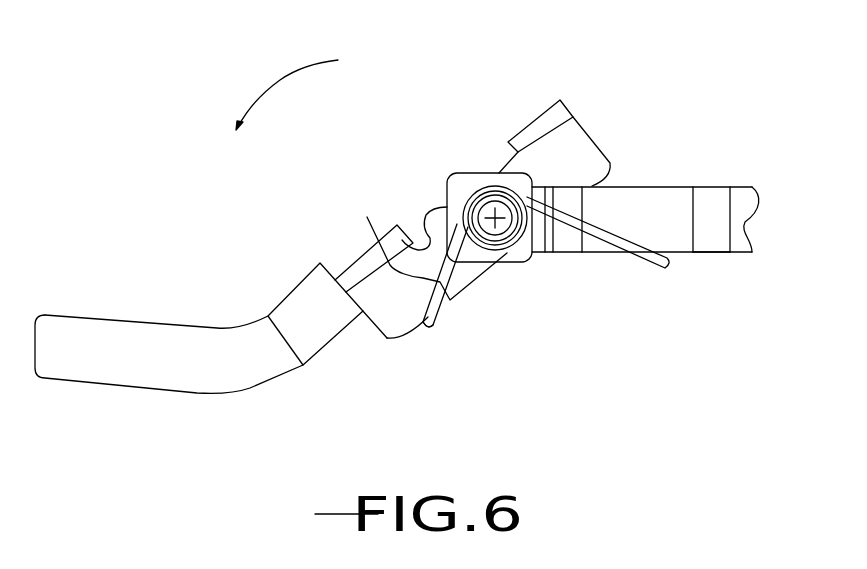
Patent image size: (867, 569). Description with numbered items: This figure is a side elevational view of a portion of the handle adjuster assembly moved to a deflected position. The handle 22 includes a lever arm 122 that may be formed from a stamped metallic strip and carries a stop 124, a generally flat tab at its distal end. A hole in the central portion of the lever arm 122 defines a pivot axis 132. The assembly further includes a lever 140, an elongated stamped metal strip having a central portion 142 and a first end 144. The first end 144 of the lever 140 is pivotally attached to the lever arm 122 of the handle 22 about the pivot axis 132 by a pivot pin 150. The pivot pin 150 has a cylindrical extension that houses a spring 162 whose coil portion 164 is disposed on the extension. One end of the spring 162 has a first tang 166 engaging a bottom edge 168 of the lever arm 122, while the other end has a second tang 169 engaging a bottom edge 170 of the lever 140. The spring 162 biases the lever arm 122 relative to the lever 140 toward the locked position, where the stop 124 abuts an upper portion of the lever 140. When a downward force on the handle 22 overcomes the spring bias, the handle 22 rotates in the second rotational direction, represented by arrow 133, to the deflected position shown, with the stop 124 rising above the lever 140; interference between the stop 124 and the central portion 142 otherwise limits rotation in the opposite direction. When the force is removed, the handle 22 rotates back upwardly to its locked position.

The handle 22 is at (78, 315).
The lever arm 122 is at (395, 325).
The stop 124 is at (540, 118).
The pivot axis 132 is at (490, 212).
The second rotational direction 133 is at (292, 68).
The lever 140 is at (652, 197).
The central portion 142 is at (710, 187).
The first end 144 is at (498, 165).
The pivot pin 150 is at (466, 226).
The spring 162 is at (367, 217).
The coil portion 164 is at (500, 258).
The first tang 166 is at (421, 325).
The bottom edge 168 is at (461, 300).
The second tang 169 is at (667, 262).
The bottom edge 170 is at (703, 258).